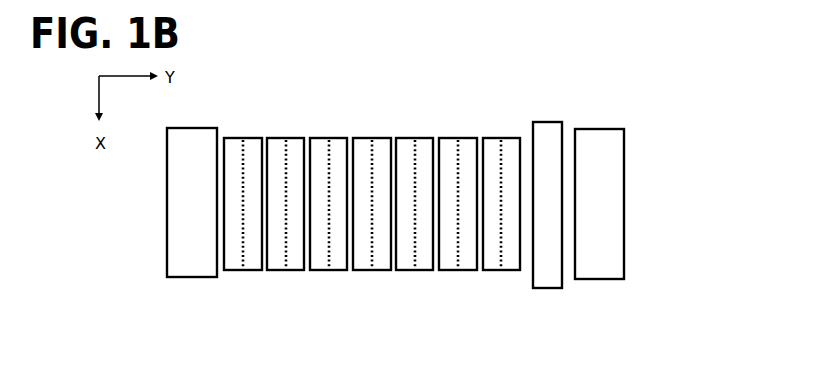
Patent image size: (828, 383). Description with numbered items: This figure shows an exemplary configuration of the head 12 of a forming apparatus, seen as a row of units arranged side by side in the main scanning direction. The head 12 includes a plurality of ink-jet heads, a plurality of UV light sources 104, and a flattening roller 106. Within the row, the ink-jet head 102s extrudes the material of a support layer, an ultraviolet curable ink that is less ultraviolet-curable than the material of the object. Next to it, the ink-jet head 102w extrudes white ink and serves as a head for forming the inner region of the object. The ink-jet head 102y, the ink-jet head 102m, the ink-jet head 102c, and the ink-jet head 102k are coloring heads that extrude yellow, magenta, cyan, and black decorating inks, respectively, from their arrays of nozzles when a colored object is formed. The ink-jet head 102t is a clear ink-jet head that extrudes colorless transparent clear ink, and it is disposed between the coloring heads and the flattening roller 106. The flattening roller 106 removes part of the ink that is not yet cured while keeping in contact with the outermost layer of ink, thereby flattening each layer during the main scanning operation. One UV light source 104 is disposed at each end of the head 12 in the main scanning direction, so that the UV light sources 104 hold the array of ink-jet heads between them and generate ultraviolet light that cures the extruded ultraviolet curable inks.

The head 12 is at (636, 53).
The UV light source 104 is at (394, 227).
The flattening roller 106 is at (554, 176).
The ink-jet head 102s is at (226, 241).
The ink-jet head 102w is at (276, 224).
The ink-jet head 102y is at (317, 241).
The ink-jet head 102m is at (370, 224).
The ink-jet head 102c is at (415, 241).
The ink-jet head 102k is at (465, 224).
The ink-jet head 102t is at (512, 242).